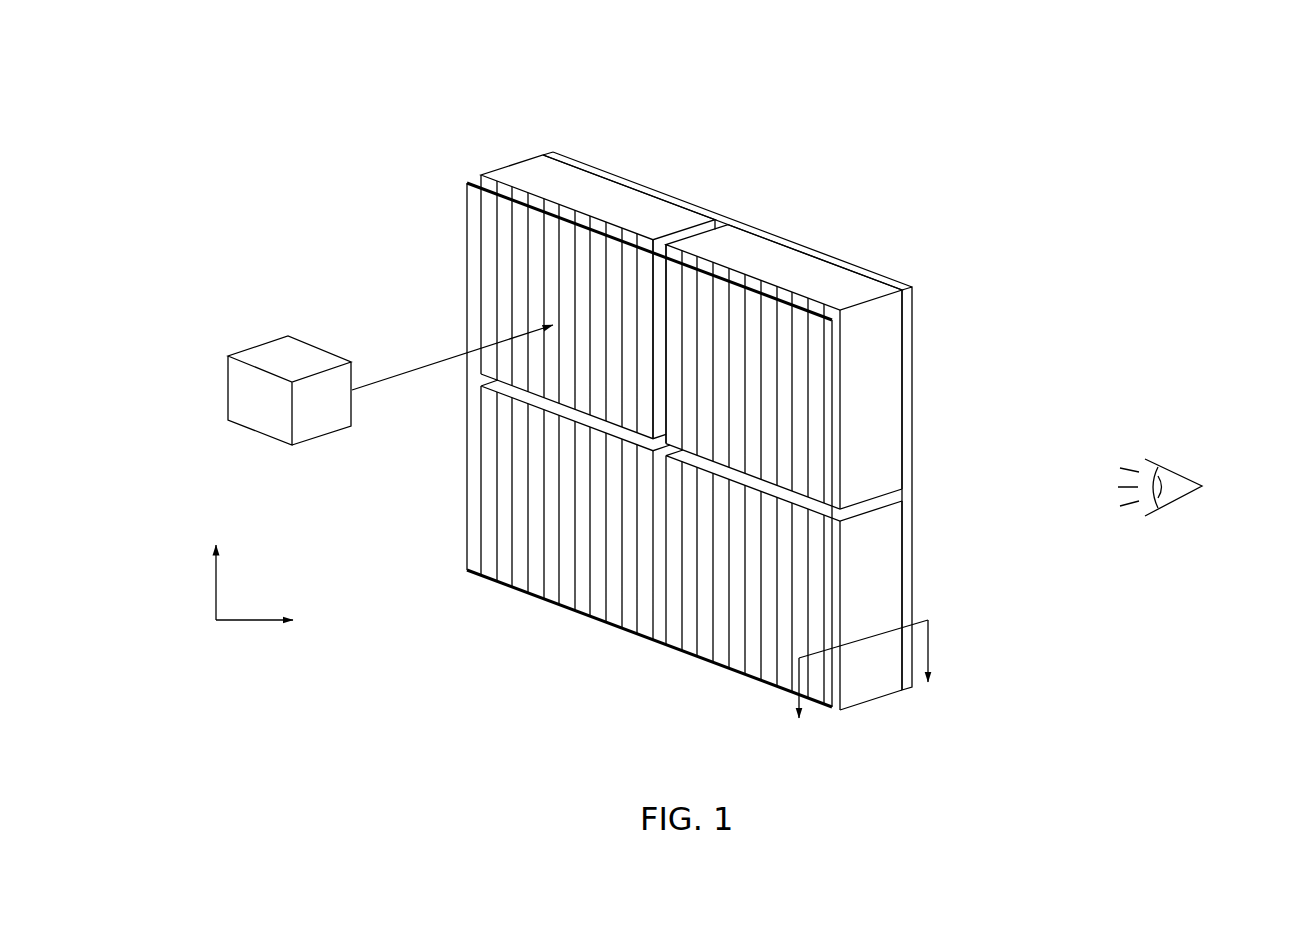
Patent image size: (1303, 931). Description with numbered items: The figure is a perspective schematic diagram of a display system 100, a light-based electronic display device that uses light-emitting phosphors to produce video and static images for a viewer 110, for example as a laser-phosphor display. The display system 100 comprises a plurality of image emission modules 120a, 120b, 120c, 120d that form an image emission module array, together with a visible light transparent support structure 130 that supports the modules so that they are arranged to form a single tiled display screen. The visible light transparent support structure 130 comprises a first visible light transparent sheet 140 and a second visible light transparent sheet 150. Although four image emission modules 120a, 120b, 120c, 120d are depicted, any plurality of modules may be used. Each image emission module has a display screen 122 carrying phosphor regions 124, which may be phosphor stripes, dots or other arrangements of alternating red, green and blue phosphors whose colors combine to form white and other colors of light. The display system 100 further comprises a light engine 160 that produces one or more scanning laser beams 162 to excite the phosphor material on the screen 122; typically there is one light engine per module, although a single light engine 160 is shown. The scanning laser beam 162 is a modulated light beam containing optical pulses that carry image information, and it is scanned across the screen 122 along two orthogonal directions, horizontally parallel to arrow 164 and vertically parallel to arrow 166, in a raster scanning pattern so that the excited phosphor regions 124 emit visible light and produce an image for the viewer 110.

The display system 100 is at (357, 97).
The viewer 110 is at (1175, 503).
The image emission module 120a is at (517, 160).
The image emission module 120b is at (860, 287).
The image emission module 120c is at (518, 562).
The image emission module 120d is at (750, 650).
The display screen 122 is at (903, 363).
The phosphor regions 124 is at (758, 307).
The visible light transparent support structure 130 is at (458, 212).
The first visible light transparent sheet 140 is at (683, 193).
The second visible light transparent sheet 150 is at (465, 260).
The light engine 160 is at (277, 409).
The scanning laser beam 162 is at (388, 375).
The arrow 164 is at (245, 622).
The arrow 166 is at (216, 582).